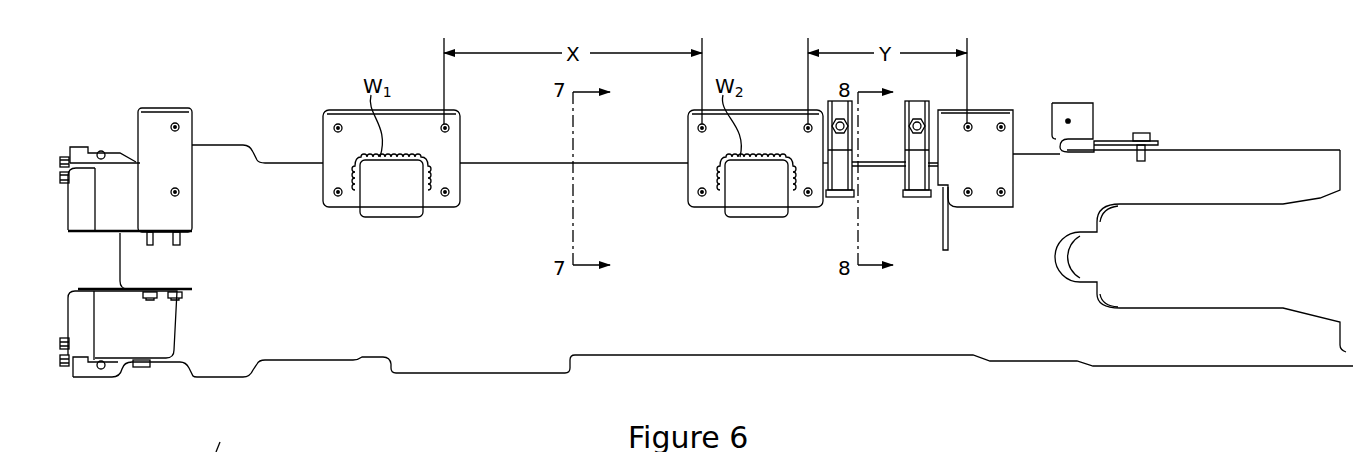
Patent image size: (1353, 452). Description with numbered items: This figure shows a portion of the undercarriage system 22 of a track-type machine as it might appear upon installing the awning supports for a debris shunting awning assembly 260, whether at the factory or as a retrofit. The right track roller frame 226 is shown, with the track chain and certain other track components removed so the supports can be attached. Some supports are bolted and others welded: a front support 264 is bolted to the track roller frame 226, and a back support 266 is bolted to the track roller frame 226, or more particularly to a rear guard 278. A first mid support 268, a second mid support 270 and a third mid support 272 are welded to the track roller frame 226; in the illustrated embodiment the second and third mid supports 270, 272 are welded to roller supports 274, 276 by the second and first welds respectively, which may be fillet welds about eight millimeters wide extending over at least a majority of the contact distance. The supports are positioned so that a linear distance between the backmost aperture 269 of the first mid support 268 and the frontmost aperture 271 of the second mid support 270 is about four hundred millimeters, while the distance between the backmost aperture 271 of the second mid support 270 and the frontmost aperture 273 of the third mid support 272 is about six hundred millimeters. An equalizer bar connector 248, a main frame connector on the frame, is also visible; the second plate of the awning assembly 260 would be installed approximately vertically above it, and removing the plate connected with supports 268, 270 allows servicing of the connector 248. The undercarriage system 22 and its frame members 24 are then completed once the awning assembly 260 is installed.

The undercarriage system 22 is at (1176, 96).
The frame member 24 is at (1148, 86).
The track roller frame 226 is at (892, 355).
The equalizer bar connector 248 is at (928, 86).
The awning assembly 260 is at (1297, 129).
The front support 264 is at (1064, 147).
The back support 266 is at (183, 216).
The first mid support 268 is at (992, 208).
The backmost aperture 269 is at (969, 123).
The second mid support 270 is at (697, 192).
The aperture 271 is at (697, 128).
The third mid support 272 is at (450, 192).
The frontmost aperture 273 is at (450, 128).
The roller support 274 is at (757, 217).
The roller support 276 is at (398, 217).
The rear guard 278 is at (92, 237).